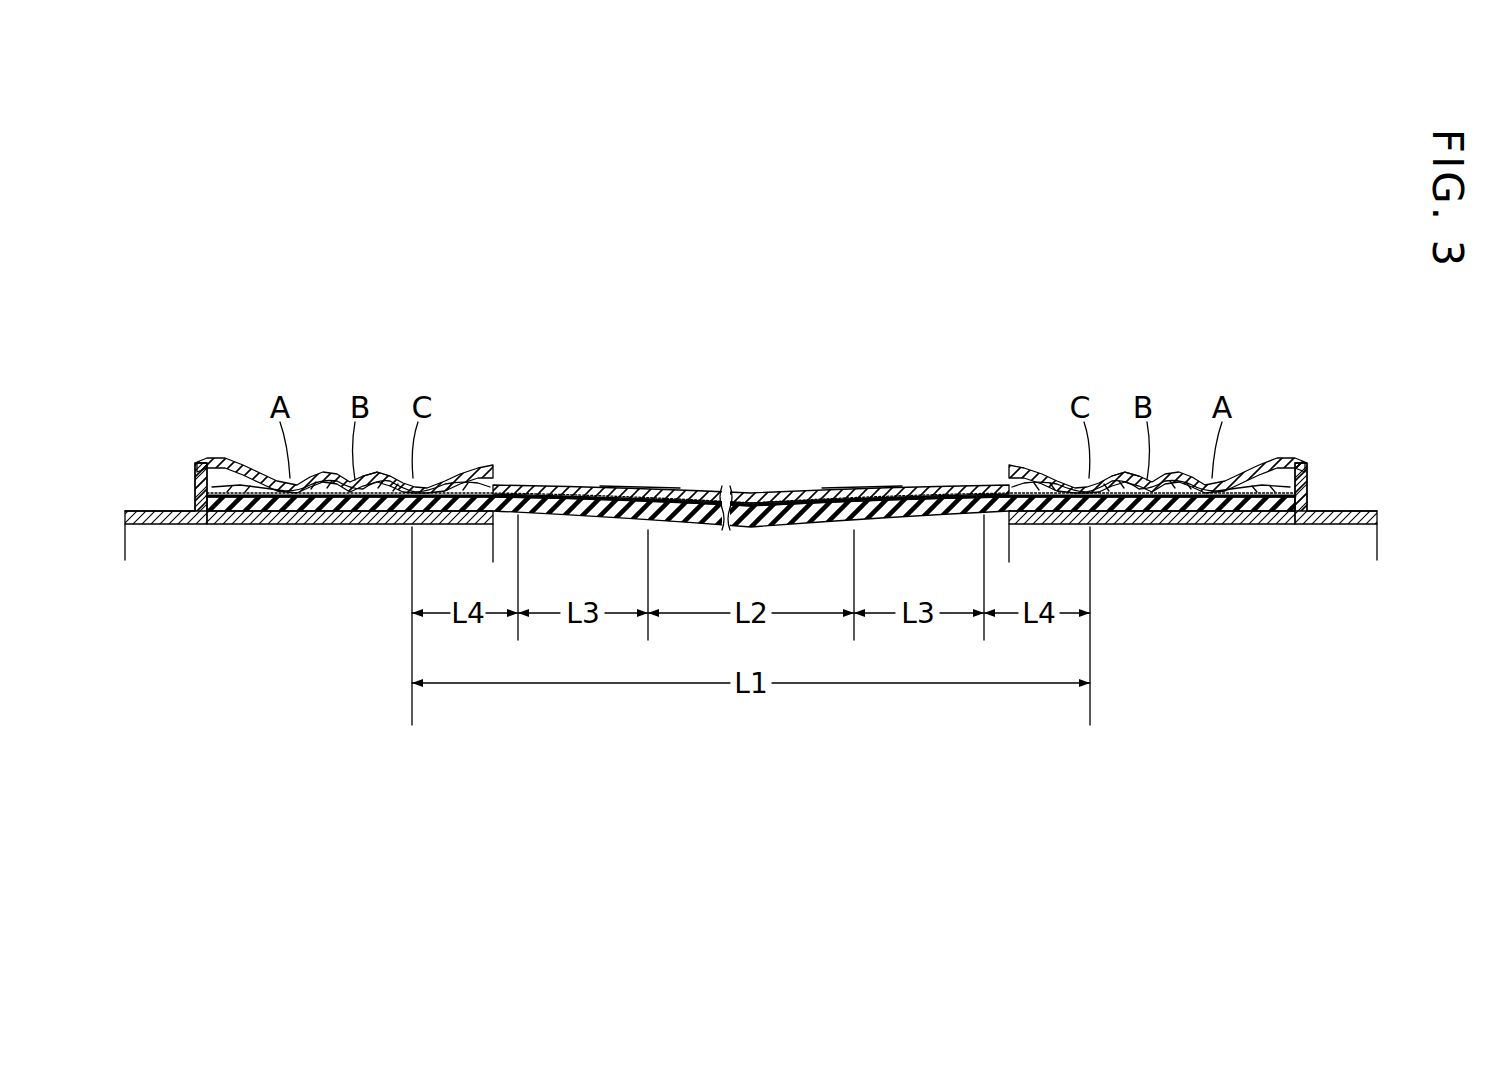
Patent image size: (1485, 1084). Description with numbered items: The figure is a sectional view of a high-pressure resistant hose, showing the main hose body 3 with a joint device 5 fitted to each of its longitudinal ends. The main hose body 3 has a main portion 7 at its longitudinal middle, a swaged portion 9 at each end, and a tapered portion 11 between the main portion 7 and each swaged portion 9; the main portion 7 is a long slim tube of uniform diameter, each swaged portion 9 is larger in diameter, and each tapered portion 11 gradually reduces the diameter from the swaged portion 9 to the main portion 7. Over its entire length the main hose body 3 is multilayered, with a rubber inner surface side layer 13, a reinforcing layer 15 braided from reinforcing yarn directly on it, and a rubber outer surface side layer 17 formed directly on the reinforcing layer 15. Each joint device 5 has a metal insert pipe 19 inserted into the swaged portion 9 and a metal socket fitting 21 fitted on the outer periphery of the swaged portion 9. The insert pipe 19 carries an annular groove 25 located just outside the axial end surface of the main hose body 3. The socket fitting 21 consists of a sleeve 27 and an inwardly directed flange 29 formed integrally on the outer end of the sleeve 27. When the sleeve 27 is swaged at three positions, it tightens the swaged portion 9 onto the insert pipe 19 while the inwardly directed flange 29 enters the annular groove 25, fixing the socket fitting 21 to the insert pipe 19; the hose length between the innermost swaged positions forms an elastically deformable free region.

The main hose body 3 is at (888, 536).
The joint device 5 is at (245, 447).
The main portion 7 is at (744, 482).
The swaged portion 9 is at (325, 526).
The tapered portion 11 is at (549, 476).
The inner surface side layer 13 is at (545, 513).
The reinforcing layer 15 is at (638, 489).
The outer surface side layer 17 is at (867, 489).
The insert pipe 19 is at (233, 526).
The socket fitting 21 is at (376, 459).
The annular groove 25 is at (168, 508).
The sleeve 27 is at (320, 482).
The inwardly directed flange 29 is at (196, 462).